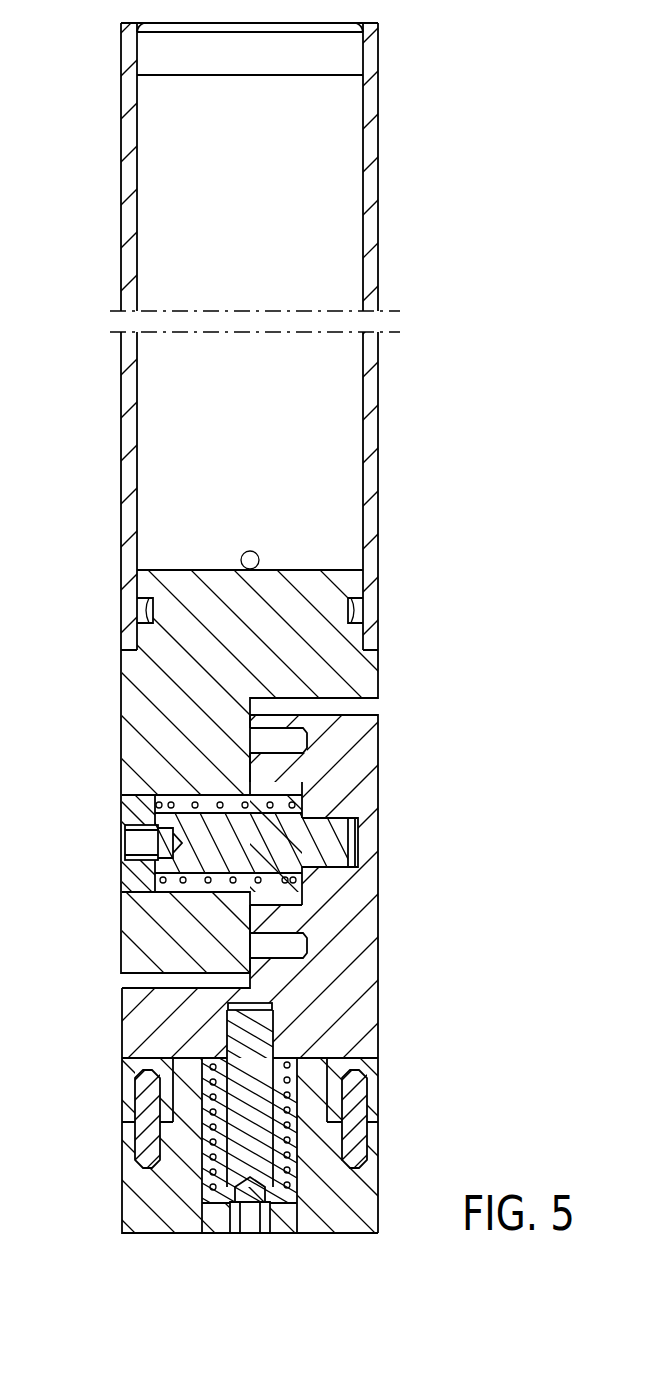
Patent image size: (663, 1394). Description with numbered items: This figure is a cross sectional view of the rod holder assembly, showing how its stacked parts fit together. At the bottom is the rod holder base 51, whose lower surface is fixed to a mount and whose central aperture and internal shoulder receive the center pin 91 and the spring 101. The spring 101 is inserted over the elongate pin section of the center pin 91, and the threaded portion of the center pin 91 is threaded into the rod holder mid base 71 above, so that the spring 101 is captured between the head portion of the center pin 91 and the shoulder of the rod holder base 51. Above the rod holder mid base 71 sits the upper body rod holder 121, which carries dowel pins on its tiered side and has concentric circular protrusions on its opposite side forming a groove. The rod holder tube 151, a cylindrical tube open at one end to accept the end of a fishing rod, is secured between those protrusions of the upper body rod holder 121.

The rod holder tube 151 is at (120, 438).
The upper body rod holder 121 is at (340, 665).
The rod holder mid base 71 is at (355, 928).
The rod holder base 51 is at (143, 1217).
The center pin 91 is at (210, 838).
The spring 101 is at (210, 880).